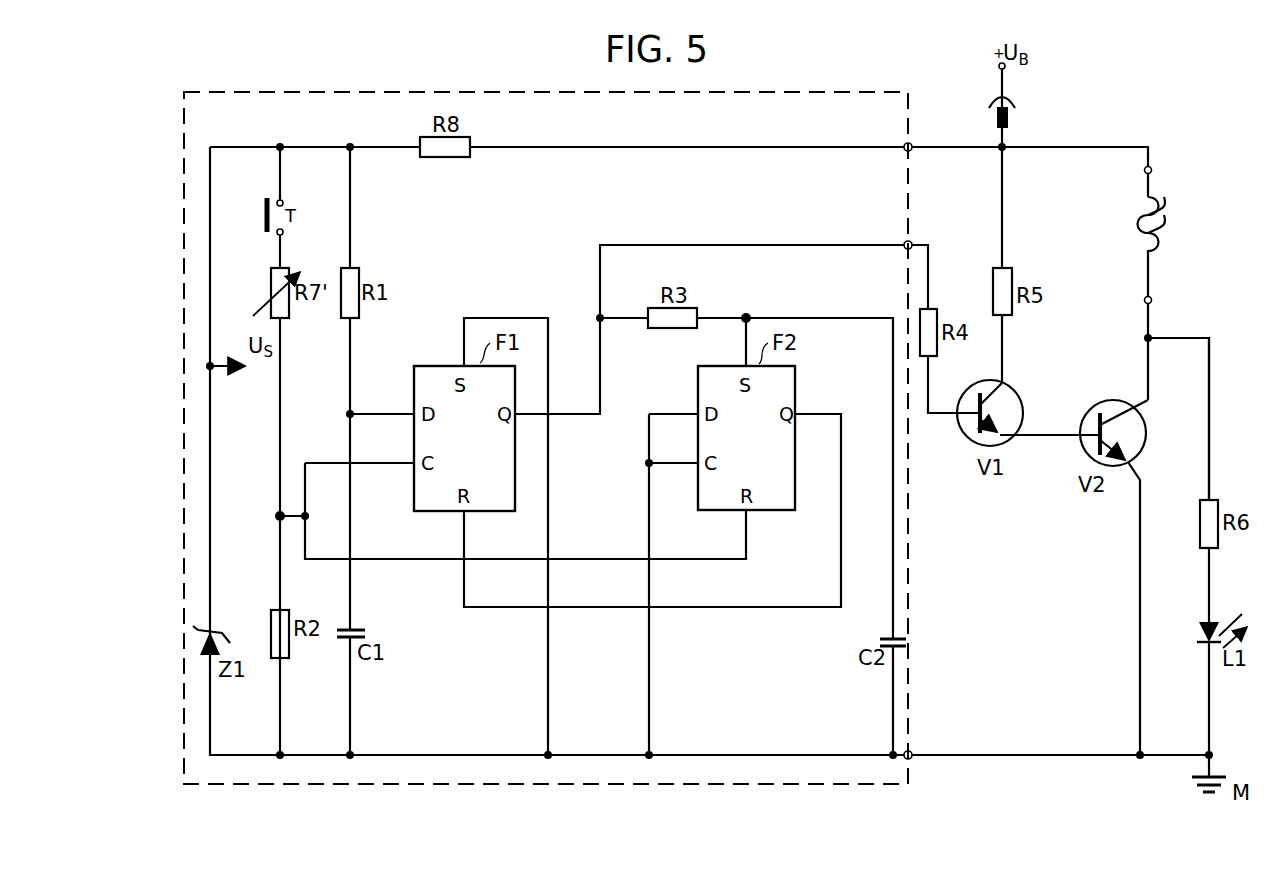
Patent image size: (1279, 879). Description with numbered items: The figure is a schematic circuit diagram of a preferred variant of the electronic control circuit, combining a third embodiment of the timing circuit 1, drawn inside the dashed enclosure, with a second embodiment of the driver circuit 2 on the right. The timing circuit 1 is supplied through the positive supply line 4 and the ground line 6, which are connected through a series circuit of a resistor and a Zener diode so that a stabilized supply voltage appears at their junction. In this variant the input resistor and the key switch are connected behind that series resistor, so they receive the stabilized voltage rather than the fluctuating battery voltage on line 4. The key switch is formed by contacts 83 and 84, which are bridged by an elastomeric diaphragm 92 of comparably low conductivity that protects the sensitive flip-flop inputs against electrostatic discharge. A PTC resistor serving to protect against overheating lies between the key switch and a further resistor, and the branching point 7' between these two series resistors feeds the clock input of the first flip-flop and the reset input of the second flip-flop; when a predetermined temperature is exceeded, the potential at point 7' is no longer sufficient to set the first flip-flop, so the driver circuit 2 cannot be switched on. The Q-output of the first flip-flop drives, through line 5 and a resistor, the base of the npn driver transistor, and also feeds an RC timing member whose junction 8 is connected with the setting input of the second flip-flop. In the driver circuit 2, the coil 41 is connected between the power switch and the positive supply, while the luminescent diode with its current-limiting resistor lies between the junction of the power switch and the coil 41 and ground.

The timing circuit 1 is at (188, 770).
The driver circuit 2 is at (1190, 298).
The line 4 is at (914, 142).
The line 5 is at (910, 242).
The line 6 is at (923, 753).
The branching point 7' is at (268, 504).
The junction 8 is at (746, 310).
The coil 41 is at (1144, 236).
The contact 83 is at (282, 201).
The contact 84 is at (283, 233).
The diaphragm 92 is at (264, 206).